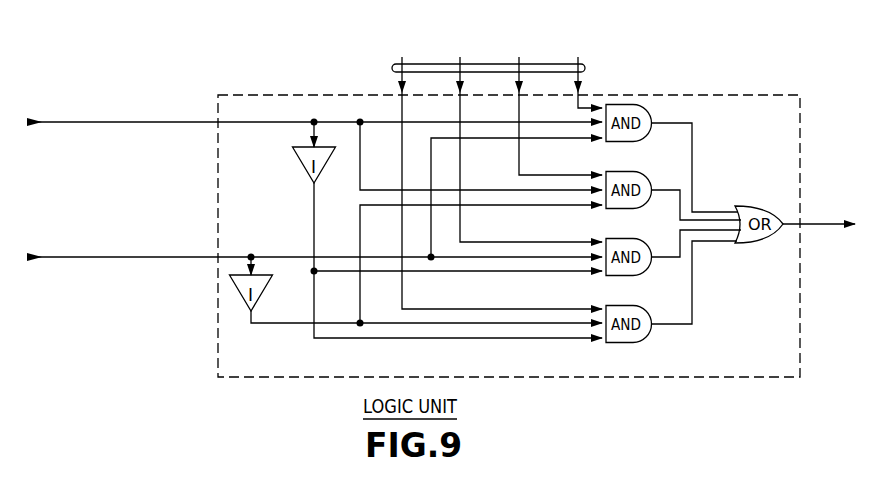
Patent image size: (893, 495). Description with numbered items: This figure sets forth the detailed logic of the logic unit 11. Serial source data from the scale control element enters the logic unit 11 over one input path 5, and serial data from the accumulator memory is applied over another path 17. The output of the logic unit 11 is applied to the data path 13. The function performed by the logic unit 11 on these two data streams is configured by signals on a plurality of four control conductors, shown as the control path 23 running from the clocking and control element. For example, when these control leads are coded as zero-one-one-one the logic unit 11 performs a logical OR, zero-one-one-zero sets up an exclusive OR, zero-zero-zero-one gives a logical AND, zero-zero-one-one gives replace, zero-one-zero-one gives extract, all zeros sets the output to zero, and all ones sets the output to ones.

The source data input 5 is at (56, 122).
The path 17 is at (61, 257).
The control path 23 is at (585, 68).
The logic unit 11 is at (679, 89).
The data path 13 is at (836, 224).